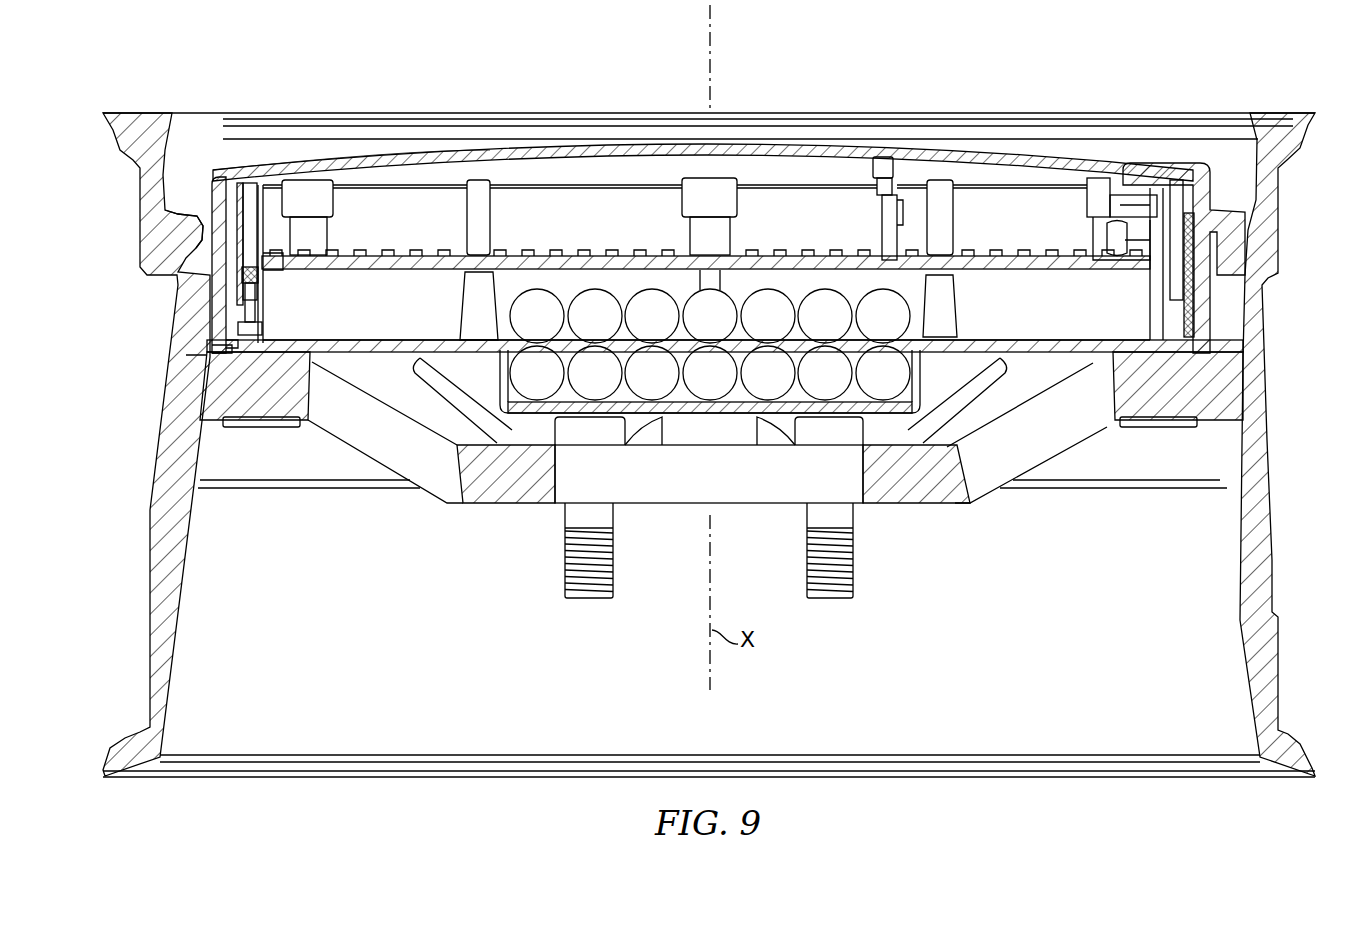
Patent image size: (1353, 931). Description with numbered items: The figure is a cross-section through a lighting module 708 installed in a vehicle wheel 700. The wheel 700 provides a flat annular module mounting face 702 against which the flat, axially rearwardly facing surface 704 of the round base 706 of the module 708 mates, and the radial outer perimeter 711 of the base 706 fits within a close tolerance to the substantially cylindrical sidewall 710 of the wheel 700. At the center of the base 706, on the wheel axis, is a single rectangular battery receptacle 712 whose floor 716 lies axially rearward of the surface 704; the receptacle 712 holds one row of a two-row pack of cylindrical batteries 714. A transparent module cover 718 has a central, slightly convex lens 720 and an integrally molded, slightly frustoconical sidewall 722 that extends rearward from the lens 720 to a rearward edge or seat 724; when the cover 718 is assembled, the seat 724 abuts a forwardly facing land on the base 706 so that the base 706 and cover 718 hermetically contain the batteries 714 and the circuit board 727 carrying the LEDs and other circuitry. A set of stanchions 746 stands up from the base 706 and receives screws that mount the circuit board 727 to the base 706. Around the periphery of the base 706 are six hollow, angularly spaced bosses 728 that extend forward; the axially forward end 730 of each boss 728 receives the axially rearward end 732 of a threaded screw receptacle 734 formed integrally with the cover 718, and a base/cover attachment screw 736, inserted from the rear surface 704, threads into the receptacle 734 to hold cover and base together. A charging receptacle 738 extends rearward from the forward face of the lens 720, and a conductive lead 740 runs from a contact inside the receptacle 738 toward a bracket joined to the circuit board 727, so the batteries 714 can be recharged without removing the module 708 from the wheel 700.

The vehicle wheel 700 is at (150, 563).
The module mounting face 702 is at (285, 340).
The axially rearwardly facing surface 704 is at (365, 356).
The base 706 is at (1015, 342).
The lighting module 708 is at (1096, 150).
The sidewall of the wheel 710 is at (205, 233).
The radial outer perimeter 711 is at (197, 340).
The battery receptacle 712 is at (925, 390).
The batteries 714 is at (727, 330).
The floor 716 is at (710, 418).
The module cover 718 is at (356, 150).
The lens 720 is at (805, 143).
The sidewall 722 is at (213, 200).
The seat 724 is at (1235, 342).
The circuit board 727 is at (578, 252).
The bosses 728 is at (227, 310).
The axially forward end 730 is at (232, 272).
The axially rearward end 732 is at (280, 250).
The screw receptacle 734 is at (268, 190).
The base/cover attachment screw 736 is at (240, 342).
The charging receptacle 738 is at (885, 165).
The conductive lead 740 is at (887, 212).
The stanchions 746 is at (292, 291).